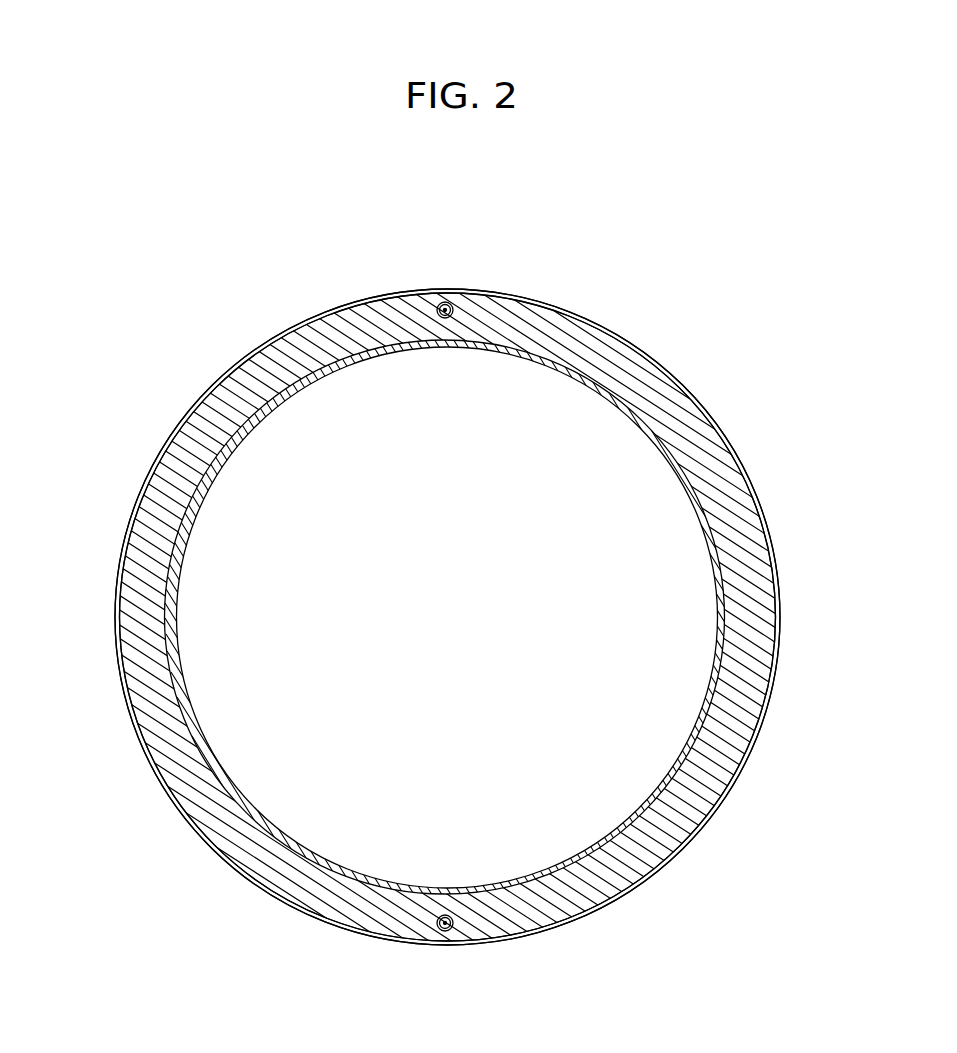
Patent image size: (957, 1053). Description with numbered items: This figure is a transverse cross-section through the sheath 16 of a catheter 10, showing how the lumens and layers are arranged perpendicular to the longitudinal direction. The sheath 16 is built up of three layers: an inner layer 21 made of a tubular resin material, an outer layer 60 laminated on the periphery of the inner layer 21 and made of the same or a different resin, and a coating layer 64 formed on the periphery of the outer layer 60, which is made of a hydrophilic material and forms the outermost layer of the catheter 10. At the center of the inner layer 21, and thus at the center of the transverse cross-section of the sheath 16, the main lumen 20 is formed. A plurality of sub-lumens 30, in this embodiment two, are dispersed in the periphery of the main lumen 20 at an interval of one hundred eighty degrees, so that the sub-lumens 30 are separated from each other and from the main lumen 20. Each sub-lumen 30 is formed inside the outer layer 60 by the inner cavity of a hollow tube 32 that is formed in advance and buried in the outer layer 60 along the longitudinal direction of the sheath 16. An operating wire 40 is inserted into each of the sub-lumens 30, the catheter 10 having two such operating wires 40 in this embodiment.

The catheter 10 is at (170, 290).
The sheath 16 is at (688, 346).
The main lumen 20 is at (231, 546).
The inner layer 21 is at (283, 399).
The sub-lumen 30 is at (433, 296).
The hollow tube 32 is at (455, 311).
The operating wire 40 is at (446, 301).
The outer layer 60 is at (745, 467).
The coating layer 64 is at (762, 732).